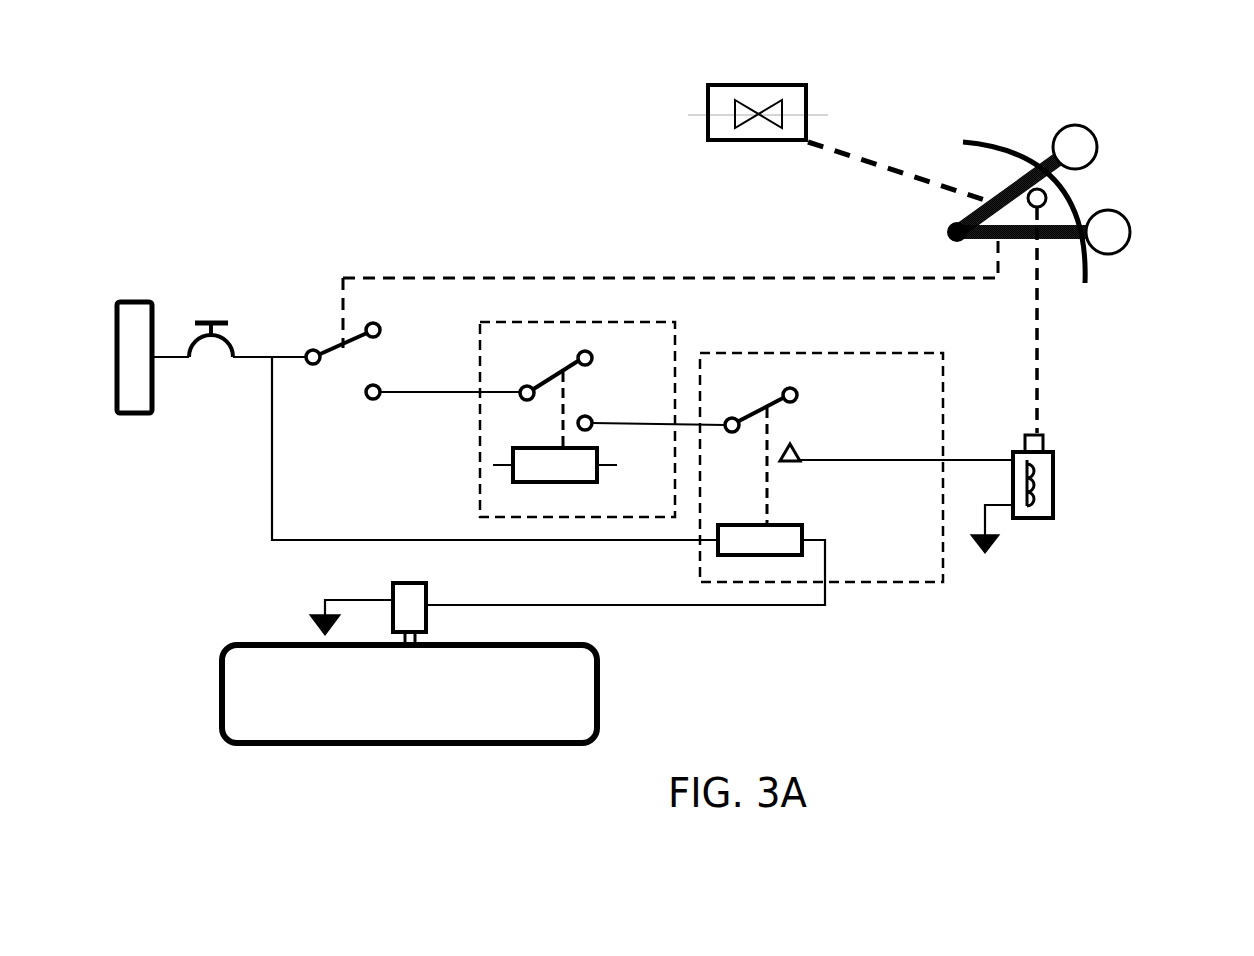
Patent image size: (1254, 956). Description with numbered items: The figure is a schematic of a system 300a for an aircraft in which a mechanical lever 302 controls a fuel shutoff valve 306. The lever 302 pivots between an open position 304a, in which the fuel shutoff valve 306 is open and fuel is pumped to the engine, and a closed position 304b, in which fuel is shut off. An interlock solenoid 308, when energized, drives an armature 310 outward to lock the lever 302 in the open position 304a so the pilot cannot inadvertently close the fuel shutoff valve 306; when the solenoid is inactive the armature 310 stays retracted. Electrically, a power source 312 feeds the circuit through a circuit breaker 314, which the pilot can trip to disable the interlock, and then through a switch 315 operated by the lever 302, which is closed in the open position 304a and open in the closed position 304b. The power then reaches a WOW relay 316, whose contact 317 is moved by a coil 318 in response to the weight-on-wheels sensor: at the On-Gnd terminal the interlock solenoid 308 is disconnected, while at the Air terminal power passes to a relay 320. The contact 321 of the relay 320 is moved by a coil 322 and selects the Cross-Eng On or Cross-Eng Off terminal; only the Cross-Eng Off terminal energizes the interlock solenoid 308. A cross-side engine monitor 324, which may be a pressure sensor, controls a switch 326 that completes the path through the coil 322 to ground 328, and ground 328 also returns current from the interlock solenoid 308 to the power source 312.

The system 300a is at (278, 76).
The lever 302 is at (1056, 210).
The open position 304a is at (1097, 157).
The closed position 304b is at (1133, 233).
The fuel shutoff valve 306 is at (757, 85).
The interlock solenoid 308 is at (1055, 500).
The armature 310 is at (990, 200).
The power source 312 is at (128, 300).
The circuit breaker 314 is at (208, 308).
The switch 315 is at (331, 385).
The WOW relay 316 is at (577, 401).
The contact 317 is at (567, 362).
The coil 318 is at (550, 483).
The relay 320 is at (821, 450).
The contact 321 is at (766, 405).
The coil 322 is at (797, 523).
The cross-side engine monitor 324 is at (568, 706).
The switch 326 is at (405, 583).
The ground 328 is at (639, 585).